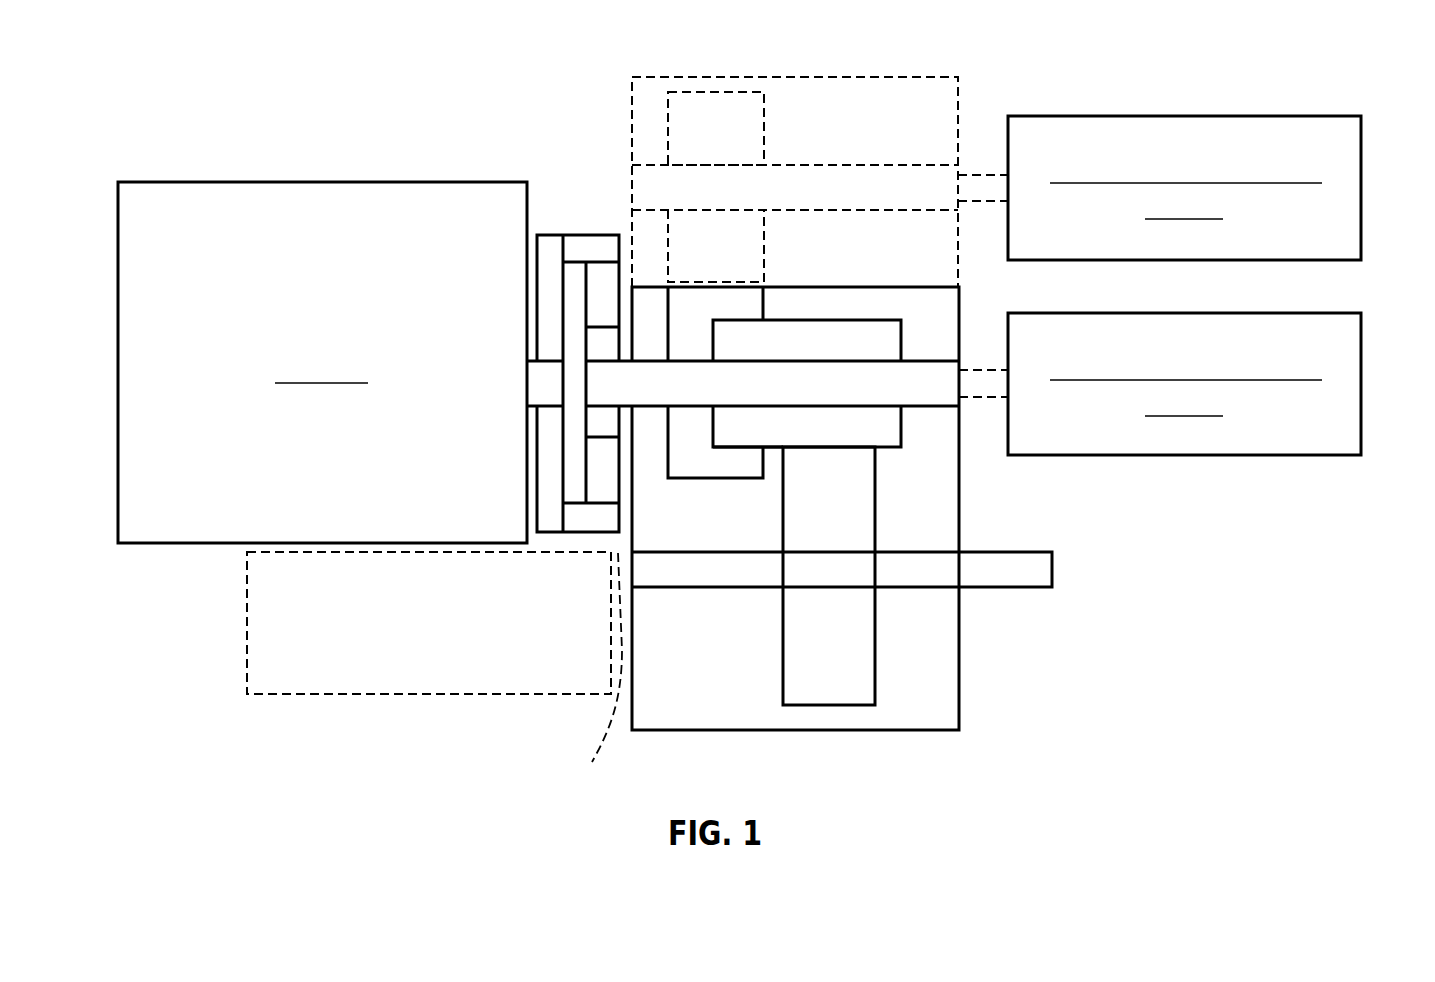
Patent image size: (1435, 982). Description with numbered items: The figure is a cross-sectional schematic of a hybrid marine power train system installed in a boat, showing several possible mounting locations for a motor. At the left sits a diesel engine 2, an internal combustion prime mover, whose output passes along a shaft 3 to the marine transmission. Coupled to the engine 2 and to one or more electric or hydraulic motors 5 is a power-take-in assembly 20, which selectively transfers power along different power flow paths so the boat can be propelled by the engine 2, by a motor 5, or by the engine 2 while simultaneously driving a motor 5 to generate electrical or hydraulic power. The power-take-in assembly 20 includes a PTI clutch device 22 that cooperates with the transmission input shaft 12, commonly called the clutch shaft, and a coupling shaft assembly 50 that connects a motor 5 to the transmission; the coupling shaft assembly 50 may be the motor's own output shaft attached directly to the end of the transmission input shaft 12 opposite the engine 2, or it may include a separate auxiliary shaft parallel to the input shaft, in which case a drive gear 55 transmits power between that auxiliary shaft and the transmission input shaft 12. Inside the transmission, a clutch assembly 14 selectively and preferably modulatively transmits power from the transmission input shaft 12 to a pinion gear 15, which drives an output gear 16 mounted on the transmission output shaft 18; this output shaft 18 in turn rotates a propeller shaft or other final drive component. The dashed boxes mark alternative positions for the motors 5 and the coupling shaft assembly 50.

The diesel engine 2 is at (190, 182).
The input shaft 3 is at (548, 385).
The electric or hydraulic motor 5 is at (1362, 145).
The transmission input shaft 12 is at (929, 387).
The clutch assembly 14 is at (678, 458).
The pinion gear 15 is at (768, 430).
The output gear 16 is at (846, 505).
The transmission output shaft 18 is at (1023, 587).
The power-take-in (PTI) assembly 20 is at (612, 200).
The PTI clutch device 22 is at (562, 452).
The coupling shaft assembly 50 is at (843, 172).
The drive gear 55 is at (703, 108).